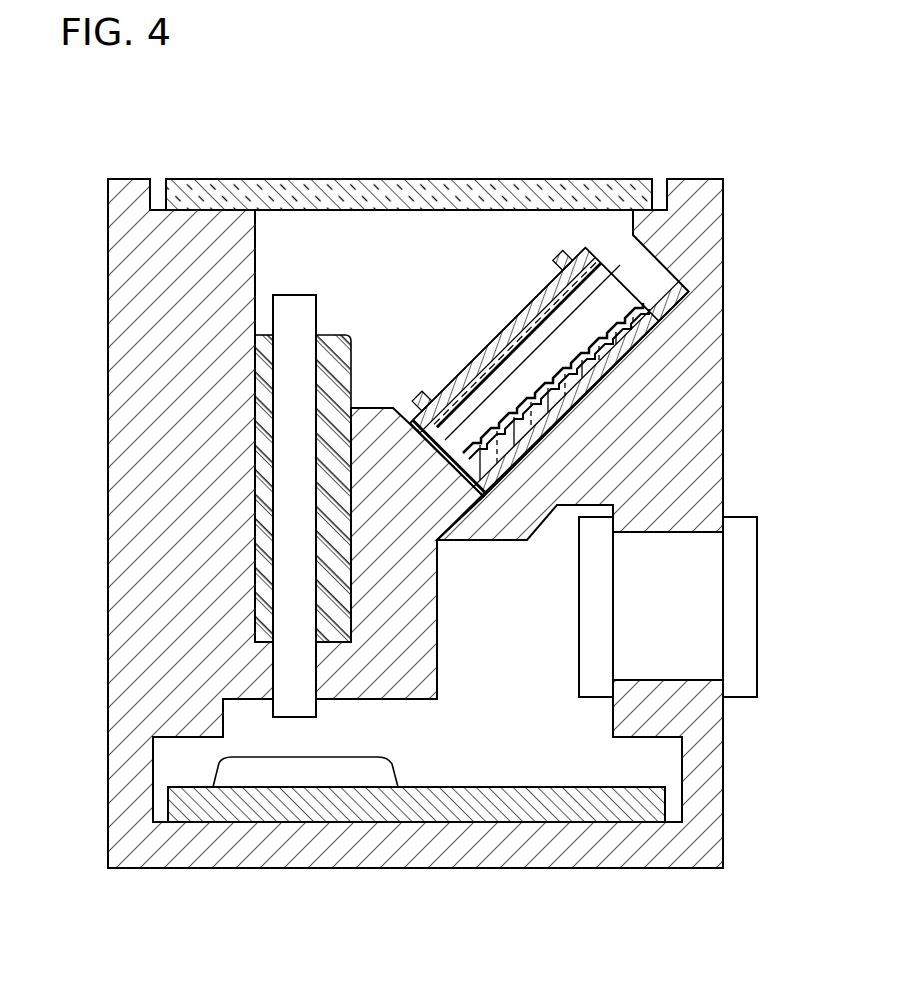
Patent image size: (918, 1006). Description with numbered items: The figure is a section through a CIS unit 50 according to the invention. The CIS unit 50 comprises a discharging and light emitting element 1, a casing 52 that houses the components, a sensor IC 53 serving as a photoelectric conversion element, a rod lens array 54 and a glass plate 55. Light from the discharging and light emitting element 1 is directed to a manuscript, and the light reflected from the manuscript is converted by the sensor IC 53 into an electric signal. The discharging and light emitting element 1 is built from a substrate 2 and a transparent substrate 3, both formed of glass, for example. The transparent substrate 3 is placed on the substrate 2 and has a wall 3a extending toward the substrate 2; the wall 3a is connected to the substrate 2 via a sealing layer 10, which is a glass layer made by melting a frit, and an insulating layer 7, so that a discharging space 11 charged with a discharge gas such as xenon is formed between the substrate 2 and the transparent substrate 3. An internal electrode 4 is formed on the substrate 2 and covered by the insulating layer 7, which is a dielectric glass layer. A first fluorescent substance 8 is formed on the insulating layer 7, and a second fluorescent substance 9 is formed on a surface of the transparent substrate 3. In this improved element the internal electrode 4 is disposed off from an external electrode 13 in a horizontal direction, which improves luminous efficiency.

The discharging and light emitting element 1 is at (463, 348).
The substrate 2 is at (472, 490).
The transparent substrate 3 is at (415, 422).
The wall 3a is at (610, 268).
The internal electrode 4 is at (578, 352).
The insulating layer 7 is at (462, 470).
The first fluorescent substance 8 is at (585, 338).
The second fluorescent substance 9 is at (542, 283).
The sealing layer 10 is at (465, 458).
The discharging space 11 is at (600, 287).
The external electrode 13 is at (563, 253).
The CIS unit 50 is at (426, 147).
The casing 52 is at (707, 846).
The sensor IC 53 is at (252, 772).
The rod lens array 54 is at (447, 448).
The glass plate 55 is at (590, 195).